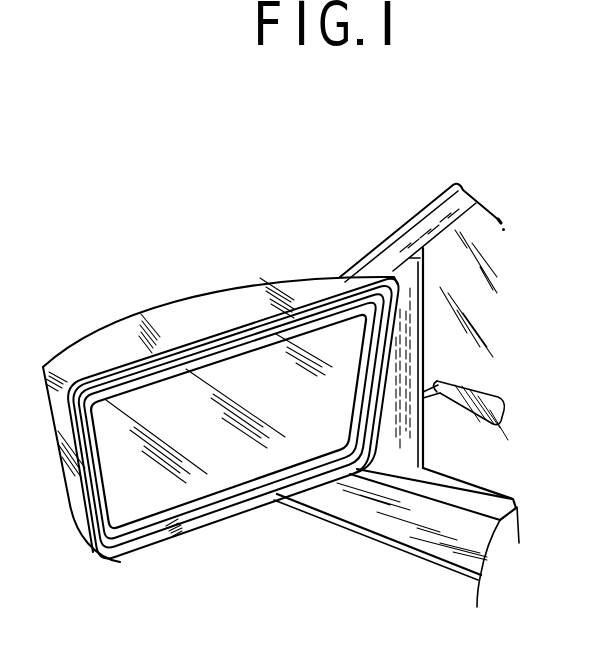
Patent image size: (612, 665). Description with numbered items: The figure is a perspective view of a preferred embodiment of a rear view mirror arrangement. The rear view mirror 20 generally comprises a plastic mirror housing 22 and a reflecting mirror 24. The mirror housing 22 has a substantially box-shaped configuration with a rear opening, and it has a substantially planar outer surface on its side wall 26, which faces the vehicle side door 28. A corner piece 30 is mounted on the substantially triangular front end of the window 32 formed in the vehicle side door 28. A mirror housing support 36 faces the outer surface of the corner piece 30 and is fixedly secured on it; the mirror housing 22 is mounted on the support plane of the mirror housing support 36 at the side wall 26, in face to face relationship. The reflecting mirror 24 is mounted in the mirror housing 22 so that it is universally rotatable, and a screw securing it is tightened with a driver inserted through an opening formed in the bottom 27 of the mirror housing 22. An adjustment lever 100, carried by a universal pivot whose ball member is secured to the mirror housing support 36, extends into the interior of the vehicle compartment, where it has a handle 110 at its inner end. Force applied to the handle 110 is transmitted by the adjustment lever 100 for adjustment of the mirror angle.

The rear view mirror 20 is at (204, 400).
The mirror housing 22 is at (82, 502).
The reflecting mirror 24 is at (247, 462).
The side wall 26 is at (390, 338).
The bottom 27 is at (167, 547).
The vehicle side door 28 is at (478, 537).
The corner piece 30 is at (414, 259).
The window 32 is at (492, 298).
The mirror housing support 36 is at (410, 362).
The adjustment lever 100 is at (438, 396).
The handle 110 is at (495, 422).